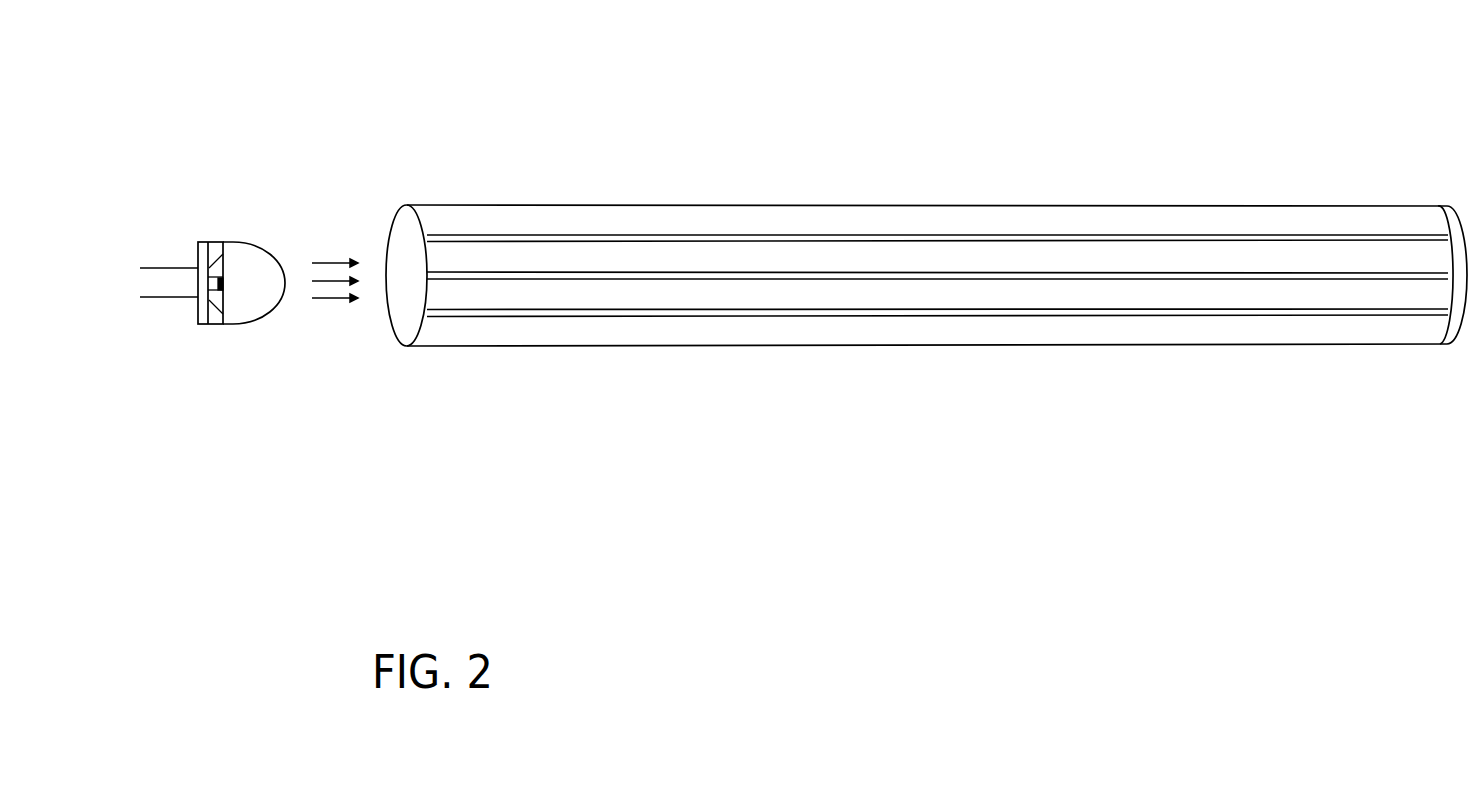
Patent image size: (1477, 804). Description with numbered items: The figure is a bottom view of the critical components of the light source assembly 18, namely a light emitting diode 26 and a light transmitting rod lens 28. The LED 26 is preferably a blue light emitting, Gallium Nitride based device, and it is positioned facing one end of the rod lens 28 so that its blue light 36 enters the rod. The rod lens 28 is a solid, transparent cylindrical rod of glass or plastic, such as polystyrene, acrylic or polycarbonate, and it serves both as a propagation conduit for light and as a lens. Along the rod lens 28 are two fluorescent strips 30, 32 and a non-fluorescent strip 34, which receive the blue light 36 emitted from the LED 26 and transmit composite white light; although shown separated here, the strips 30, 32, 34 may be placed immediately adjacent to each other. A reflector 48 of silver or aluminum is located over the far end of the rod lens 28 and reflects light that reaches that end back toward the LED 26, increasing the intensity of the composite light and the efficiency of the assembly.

The light source assembly 18 is at (632, 42).
The light emitting diode 26 is at (243, 241).
The light transmitting rod lens 28 is at (857, 204).
The fluorescent strip 30 is at (1077, 237).
The fluorescent strip 32 is at (1200, 275).
The non-fluorescent strip 34 is at (1045, 312).
The blue light 36 is at (333, 262).
The reflector 48 is at (1450, 207).